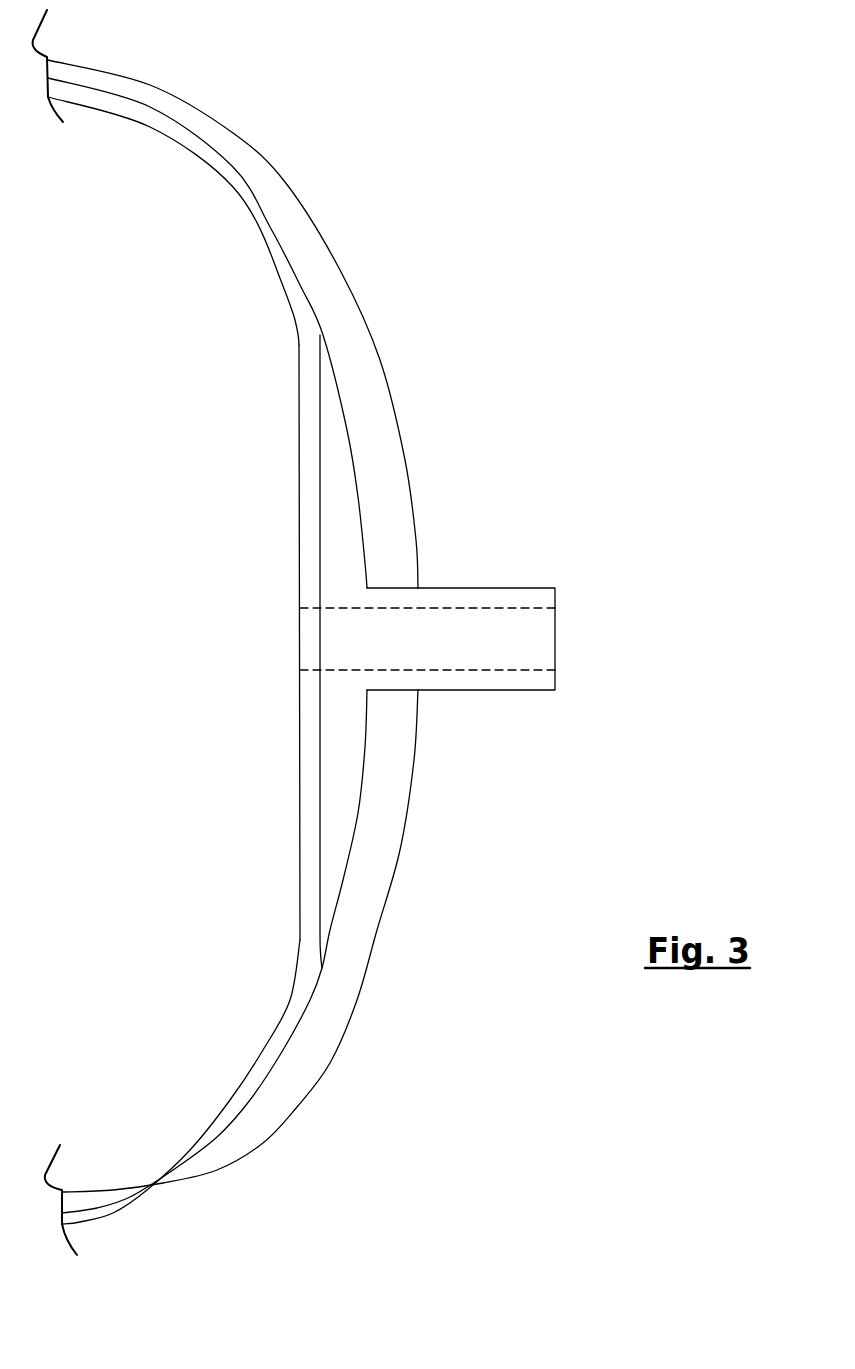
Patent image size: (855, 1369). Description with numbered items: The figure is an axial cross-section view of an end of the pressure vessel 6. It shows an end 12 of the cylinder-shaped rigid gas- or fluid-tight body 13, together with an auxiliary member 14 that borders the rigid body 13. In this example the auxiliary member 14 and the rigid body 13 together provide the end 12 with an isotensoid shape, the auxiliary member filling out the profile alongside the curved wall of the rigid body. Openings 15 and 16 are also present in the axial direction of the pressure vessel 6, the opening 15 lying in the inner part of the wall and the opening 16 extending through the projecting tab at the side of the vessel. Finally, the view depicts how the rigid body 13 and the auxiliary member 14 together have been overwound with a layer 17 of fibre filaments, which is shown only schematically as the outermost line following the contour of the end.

The pressure vessel 6 is at (73, 607).
The end 12 is at (307, 138).
The rigid gas- or fluid-tight body 13 is at (297, 297).
The auxiliary member 14 is at (337, 467).
The opening 15 is at (310, 635).
The opening 16 is at (448, 643).
The layer of fibre filaments 17 is at (383, 528).